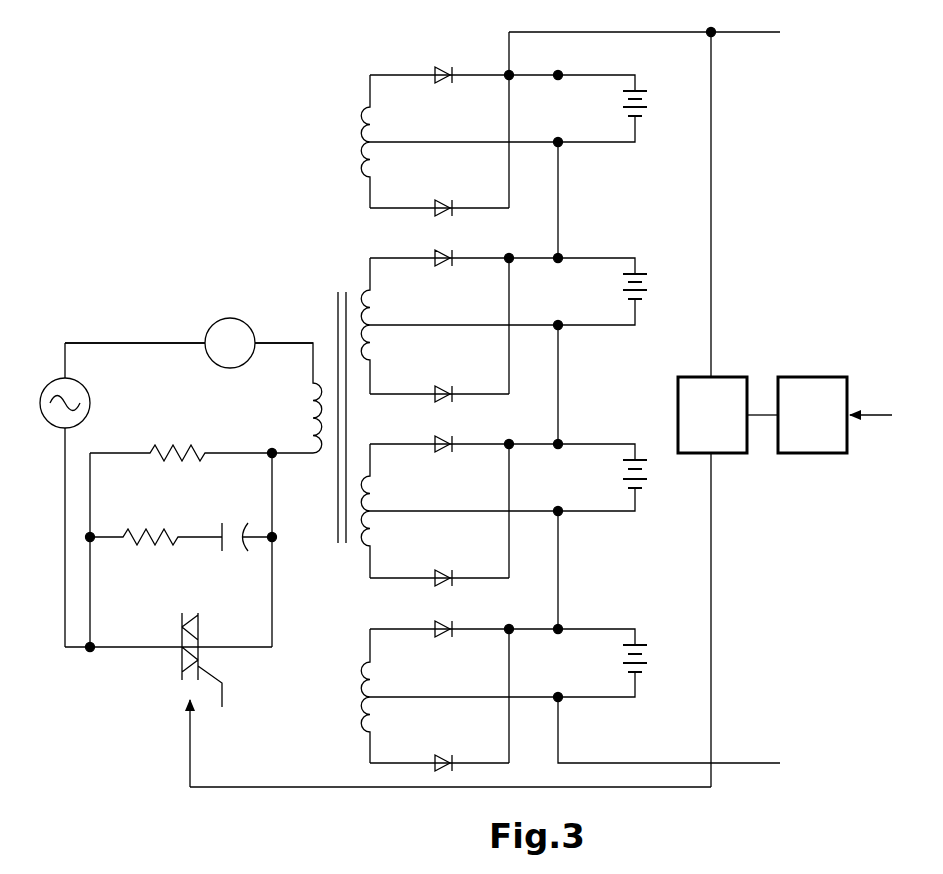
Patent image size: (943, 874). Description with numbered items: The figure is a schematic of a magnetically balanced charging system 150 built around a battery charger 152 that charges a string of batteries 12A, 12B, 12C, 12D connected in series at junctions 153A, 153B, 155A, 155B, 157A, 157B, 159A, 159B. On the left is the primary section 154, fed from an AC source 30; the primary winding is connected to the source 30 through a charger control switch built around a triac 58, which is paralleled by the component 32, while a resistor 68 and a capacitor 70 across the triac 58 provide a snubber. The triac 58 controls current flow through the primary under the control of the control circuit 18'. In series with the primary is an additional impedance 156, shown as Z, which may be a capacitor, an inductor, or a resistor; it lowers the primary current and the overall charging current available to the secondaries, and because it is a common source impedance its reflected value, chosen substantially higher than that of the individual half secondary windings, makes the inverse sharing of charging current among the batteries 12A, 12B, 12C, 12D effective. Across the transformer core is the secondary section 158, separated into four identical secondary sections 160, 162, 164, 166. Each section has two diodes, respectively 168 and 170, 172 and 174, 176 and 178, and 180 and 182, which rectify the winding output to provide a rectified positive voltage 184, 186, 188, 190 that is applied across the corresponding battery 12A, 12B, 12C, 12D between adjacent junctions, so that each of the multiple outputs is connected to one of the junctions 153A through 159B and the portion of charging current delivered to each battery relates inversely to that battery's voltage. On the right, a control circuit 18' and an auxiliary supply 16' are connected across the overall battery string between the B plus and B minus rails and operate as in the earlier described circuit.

The magnetically balanced charging system 150 is at (238, 198).
The primary section 154 is at (138, 343).
The source 30 is at (44, 410).
The impedance 156 is at (232, 322).
The battery charger 152 is at (283, 343).
The resistor paralleling charger control switch 32 is at (163, 450).
The resistor 68 is at (146, 550).
The capacitor 70 is at (232, 556).
The triac 58 is at (180, 663).
The secondary section 158 is at (356, 258).
The first secondary section 160 is at (350, 143).
The second secondary section 162 is at (360, 293).
The third secondary section 164 is at (354, 562).
The fourth secondary section 166 is at (358, 707).
The diode 168 is at (443, 67).
The diode 170 is at (443, 200).
The diode 172 is at (443, 268).
The diode 174 is at (443, 386).
The diode 176 is at (443, 454).
The diode 178 is at (443, 569).
The diode 180 is at (443, 639).
The diode 182 is at (443, 754).
The junction 153A is at (559, 81).
The junction 153B is at (560, 146).
The junction 155A is at (559, 264).
The junction 155B is at (560, 329).
The junction 157A is at (559, 450).
The junction 157B is at (560, 515).
The junction 159A is at (559, 635).
The junction 159B is at (560, 700).
The rectified positive voltage 184 is at (604, 74).
The rectified positive voltage 186 is at (604, 257).
The rectified positive voltage 188 is at (585, 443).
The rectified positive voltage 190 is at (603, 629).
The battery 12A is at (661, 101).
The battery 12B is at (661, 284).
The battery 12C is at (661, 479).
The battery 12D is at (661, 661).
The control circuit 18' is at (665, 403).
The auxiliary supply 16' is at (819, 415).